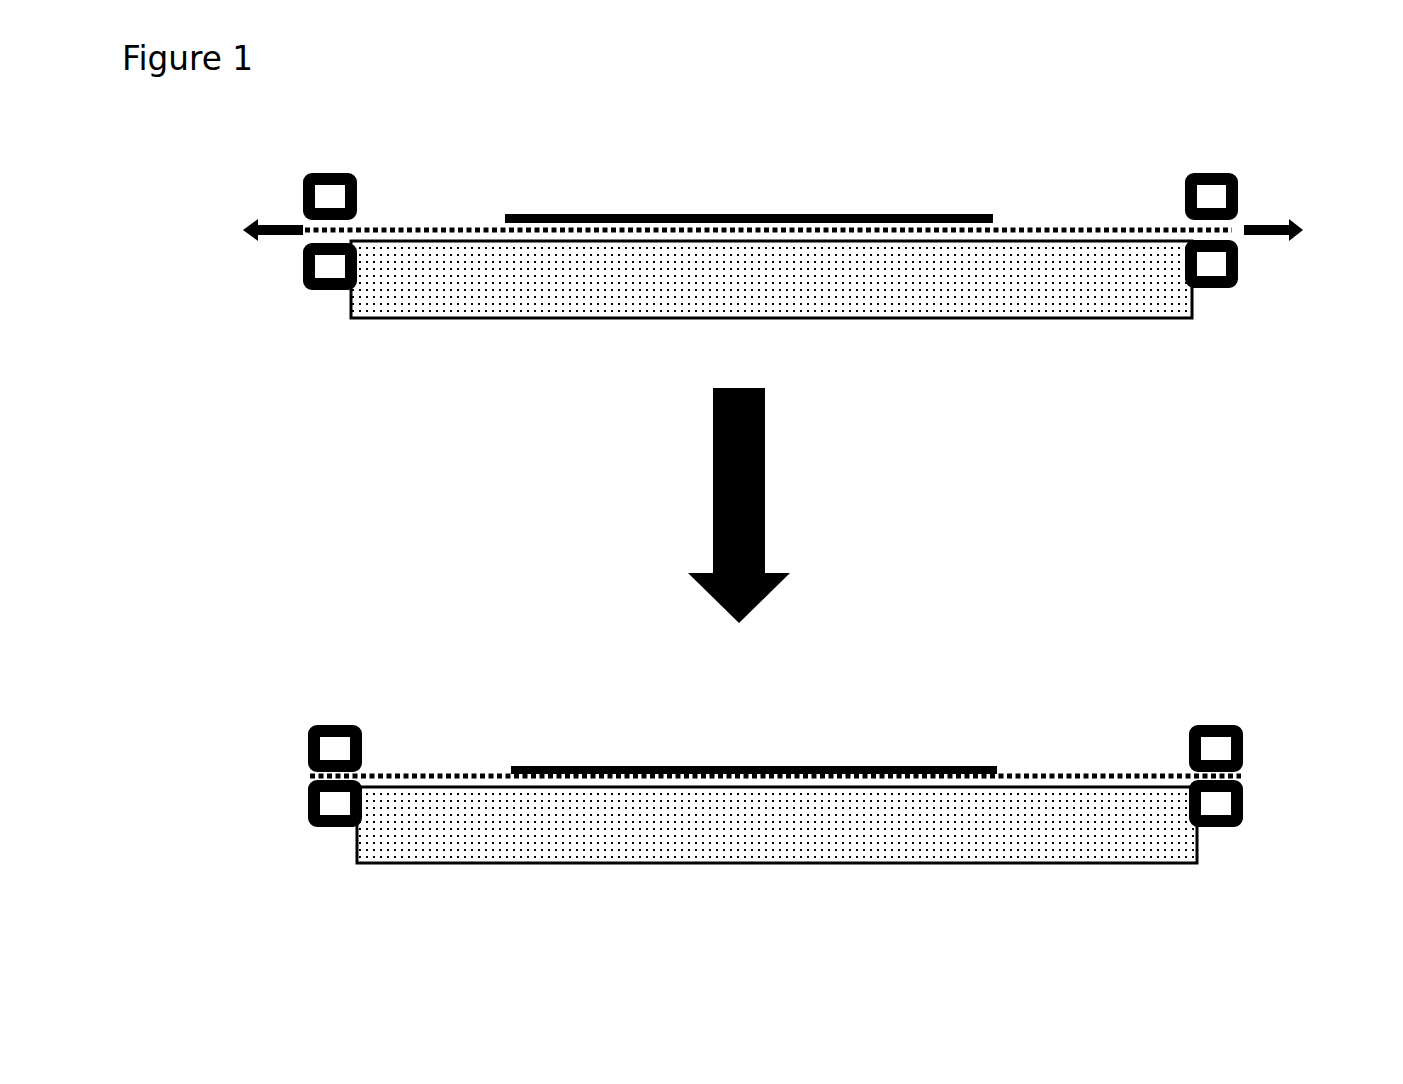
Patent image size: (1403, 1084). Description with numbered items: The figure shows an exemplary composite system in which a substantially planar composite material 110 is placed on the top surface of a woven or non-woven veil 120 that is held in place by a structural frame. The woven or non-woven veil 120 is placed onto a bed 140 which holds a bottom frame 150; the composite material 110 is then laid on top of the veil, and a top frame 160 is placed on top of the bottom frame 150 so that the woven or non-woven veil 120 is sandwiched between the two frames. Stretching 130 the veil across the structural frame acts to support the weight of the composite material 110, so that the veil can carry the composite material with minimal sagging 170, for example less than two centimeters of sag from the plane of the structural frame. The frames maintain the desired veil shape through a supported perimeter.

The composite material 110 is at (588, 213).
The woven or non-woven veil 120 is at (1027, 230).
The stretching 130 is at (255, 223).
The bed 140 is at (410, 319).
The bottom frame 150 is at (303, 285).
The top frame 160 is at (340, 173).
The sagging 170 is at (762, 782).